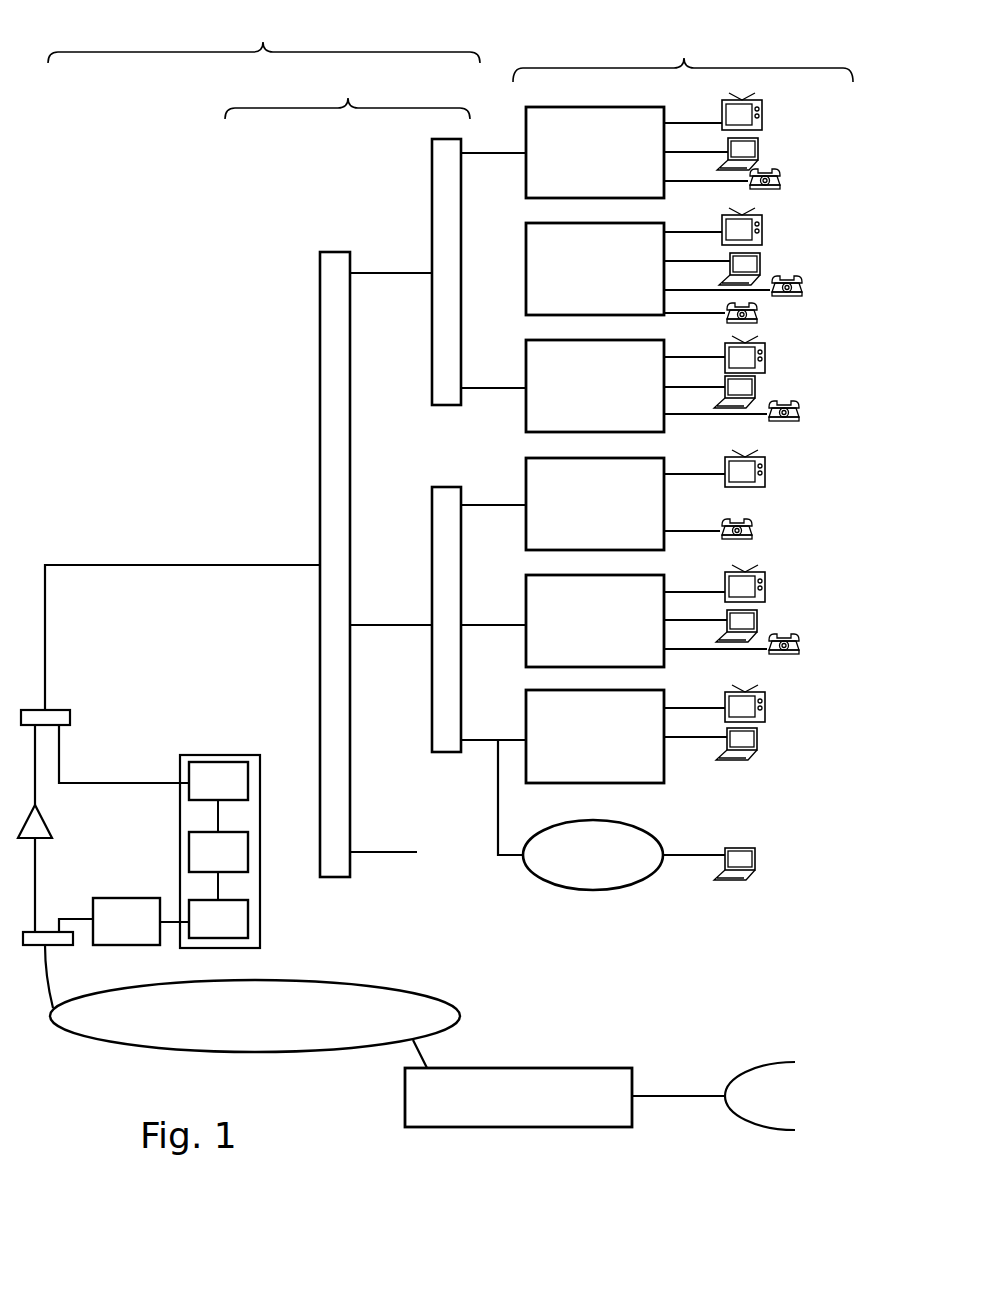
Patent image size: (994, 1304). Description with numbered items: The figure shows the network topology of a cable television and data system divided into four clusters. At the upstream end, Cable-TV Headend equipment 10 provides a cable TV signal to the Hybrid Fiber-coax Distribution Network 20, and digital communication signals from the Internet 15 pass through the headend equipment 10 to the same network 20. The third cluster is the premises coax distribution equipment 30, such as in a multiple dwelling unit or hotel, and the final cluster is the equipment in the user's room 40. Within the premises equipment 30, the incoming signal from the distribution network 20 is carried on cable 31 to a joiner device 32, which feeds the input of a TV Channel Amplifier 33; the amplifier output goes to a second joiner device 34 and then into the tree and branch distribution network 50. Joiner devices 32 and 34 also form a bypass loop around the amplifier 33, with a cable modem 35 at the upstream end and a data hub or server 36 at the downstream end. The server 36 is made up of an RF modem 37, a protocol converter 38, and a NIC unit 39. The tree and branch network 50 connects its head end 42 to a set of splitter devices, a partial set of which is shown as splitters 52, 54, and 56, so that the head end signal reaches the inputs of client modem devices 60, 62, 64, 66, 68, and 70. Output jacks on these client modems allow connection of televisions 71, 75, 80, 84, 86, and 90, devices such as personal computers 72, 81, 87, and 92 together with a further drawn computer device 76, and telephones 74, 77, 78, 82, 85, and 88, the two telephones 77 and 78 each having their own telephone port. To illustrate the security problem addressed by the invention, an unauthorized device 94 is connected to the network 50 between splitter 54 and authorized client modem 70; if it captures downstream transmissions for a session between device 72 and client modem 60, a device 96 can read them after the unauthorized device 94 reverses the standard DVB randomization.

The Cable-TV Headend equipment 10 is at (510, 1109).
The Internet 15 is at (760, 1096).
The Hybrid Fiber-coax (HFC) Distribution Network 20 is at (232, 1027).
The premises coax distribution equipment 30 is at (264, 36).
The cable 31 is at (56, 996).
The joiner device 32 is at (27, 931).
The TV Channel Amplifier 33 is at (46, 820).
The second joiner device 34 is at (62, 710).
The cable modem 35 is at (118, 931).
The data hub 36 is at (228, 755).
The RF modem 37 is at (211, 793).
The protocol converter 38 is at (211, 865).
The NIC unit 39 is at (211, 932).
The user's room equipment 40 is at (683, 55).
The head end of the tree and branch network 42 is at (255, 565).
The tree and branch distribution network 50 is at (347, 92).
The splitter 52 is at (333, 252).
The splitter 54 is at (436, 487).
The splitter 56 is at (446, 139).
The client modem device 60 is at (637, 152).
The client modem device 62 is at (648, 269).
The client modem device 64 is at (646, 386).
The client modem device 66 is at (625, 504).
The client modem device 68 is at (646, 621).
The client modem device 70 is at (626, 736).
The television 71 is at (764, 123).
The personal computer 72 is at (760, 151).
The telephone 74 is at (783, 182).
The television 75 is at (764, 224).
The computer 76 is at (762, 264).
The telephone 77 is at (805, 288).
The telephone 78 is at (760, 313).
The television 80 is at (767, 359).
The personal computer 81 is at (757, 385).
The telephone 82 is at (802, 413).
The television 84 is at (767, 472).
The telephone 85 is at (755, 532).
The television 86 is at (767, 594).
The personal computer 87 is at (759, 617).
The telephone 88 is at (802, 650).
The television 90 is at (767, 707).
The personal computer 92 is at (759, 738).
The unauthorized device 94 is at (624, 855).
The device 96 is at (757, 860).